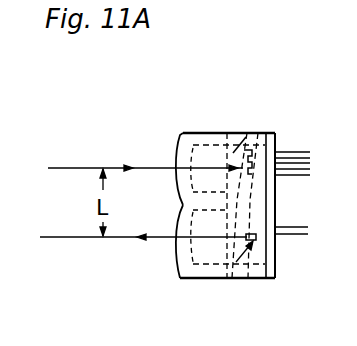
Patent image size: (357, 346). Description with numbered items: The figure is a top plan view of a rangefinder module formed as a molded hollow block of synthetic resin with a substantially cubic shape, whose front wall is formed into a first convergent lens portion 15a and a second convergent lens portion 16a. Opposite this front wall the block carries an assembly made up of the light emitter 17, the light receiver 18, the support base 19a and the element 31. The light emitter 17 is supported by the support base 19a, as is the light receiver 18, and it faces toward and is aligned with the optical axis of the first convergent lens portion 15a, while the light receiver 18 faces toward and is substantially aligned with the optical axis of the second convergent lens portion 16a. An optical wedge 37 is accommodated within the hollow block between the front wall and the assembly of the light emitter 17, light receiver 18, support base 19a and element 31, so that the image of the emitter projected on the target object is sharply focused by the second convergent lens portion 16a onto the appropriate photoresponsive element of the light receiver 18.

The first convergent lens portion 15a is at (183, 250).
The second convergent lens portion 16a is at (185, 152).
The light emitter 17 is at (238, 260).
The light receiver 18 is at (245, 142).
The support base 19a is at (262, 136).
The element of the assembly 31 is at (277, 252).
The optical wedge 37 is at (243, 133).